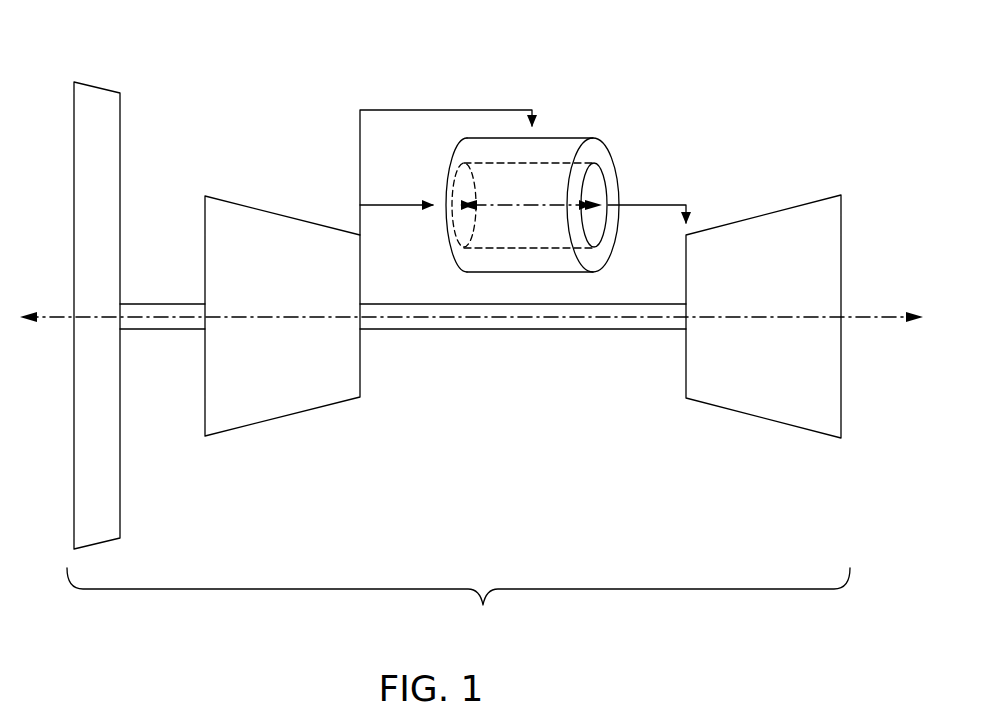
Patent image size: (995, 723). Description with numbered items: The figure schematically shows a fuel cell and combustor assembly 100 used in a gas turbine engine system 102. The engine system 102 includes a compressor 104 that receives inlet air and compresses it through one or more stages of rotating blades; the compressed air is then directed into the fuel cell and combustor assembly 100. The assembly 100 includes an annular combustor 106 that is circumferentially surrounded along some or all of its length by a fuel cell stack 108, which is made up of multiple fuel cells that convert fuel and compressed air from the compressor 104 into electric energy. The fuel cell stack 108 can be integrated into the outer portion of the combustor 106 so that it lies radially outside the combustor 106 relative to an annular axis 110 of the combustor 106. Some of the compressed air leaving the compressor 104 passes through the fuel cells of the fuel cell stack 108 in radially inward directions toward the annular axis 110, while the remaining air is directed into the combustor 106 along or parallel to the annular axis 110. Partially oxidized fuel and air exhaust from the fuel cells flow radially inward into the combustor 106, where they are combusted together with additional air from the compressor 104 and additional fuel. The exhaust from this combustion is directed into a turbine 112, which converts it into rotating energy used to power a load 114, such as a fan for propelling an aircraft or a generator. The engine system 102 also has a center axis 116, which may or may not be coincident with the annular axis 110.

The fuel cell and combustor assembly 100 is at (536, 217).
The gas turbine engine system 102 is at (458, 601).
The compressor 104 is at (283, 417).
The annular combustor 106 is at (551, 248).
The fuel cell stack 108 is at (478, 272).
The annular axis 110 is at (532, 205).
The turbine 112 is at (750, 413).
The load 114 is at (120, 477).
The center axis 116 is at (865, 316).